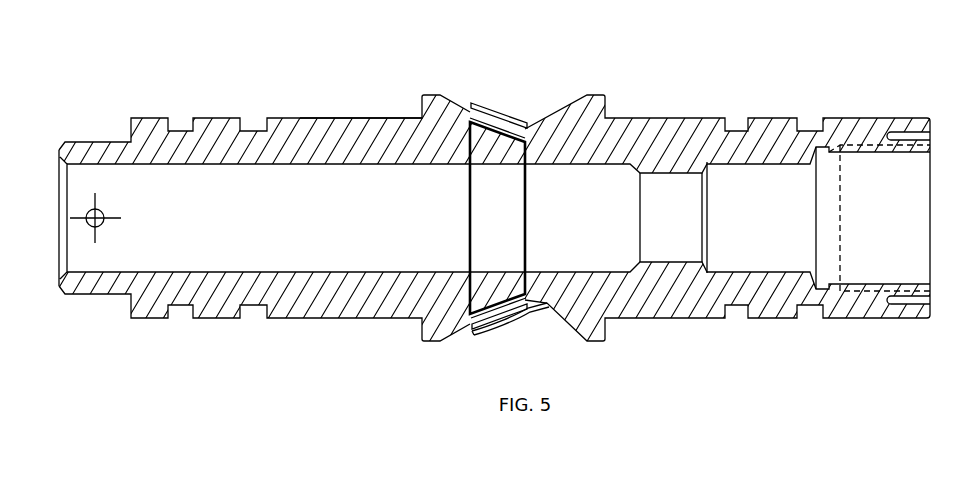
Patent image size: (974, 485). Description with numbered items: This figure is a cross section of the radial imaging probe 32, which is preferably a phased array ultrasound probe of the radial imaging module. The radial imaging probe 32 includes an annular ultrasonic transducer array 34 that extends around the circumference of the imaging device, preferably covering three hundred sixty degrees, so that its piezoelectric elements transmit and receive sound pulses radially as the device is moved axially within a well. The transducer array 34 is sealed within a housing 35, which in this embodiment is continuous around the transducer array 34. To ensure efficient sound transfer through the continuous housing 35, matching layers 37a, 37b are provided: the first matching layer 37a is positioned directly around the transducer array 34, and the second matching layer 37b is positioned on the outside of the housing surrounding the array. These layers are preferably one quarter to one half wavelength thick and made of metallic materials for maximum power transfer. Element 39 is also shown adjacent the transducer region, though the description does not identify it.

The radial imaging probe 32 is at (650, 62).
The annular ultrasonic transducer array 34 is at (516, 122).
The housing 35 is at (402, 117).
The first matching layer 37a is at (492, 119).
The second matching layer 37b is at (474, 112).
The retaining ring 39 is at (522, 134).